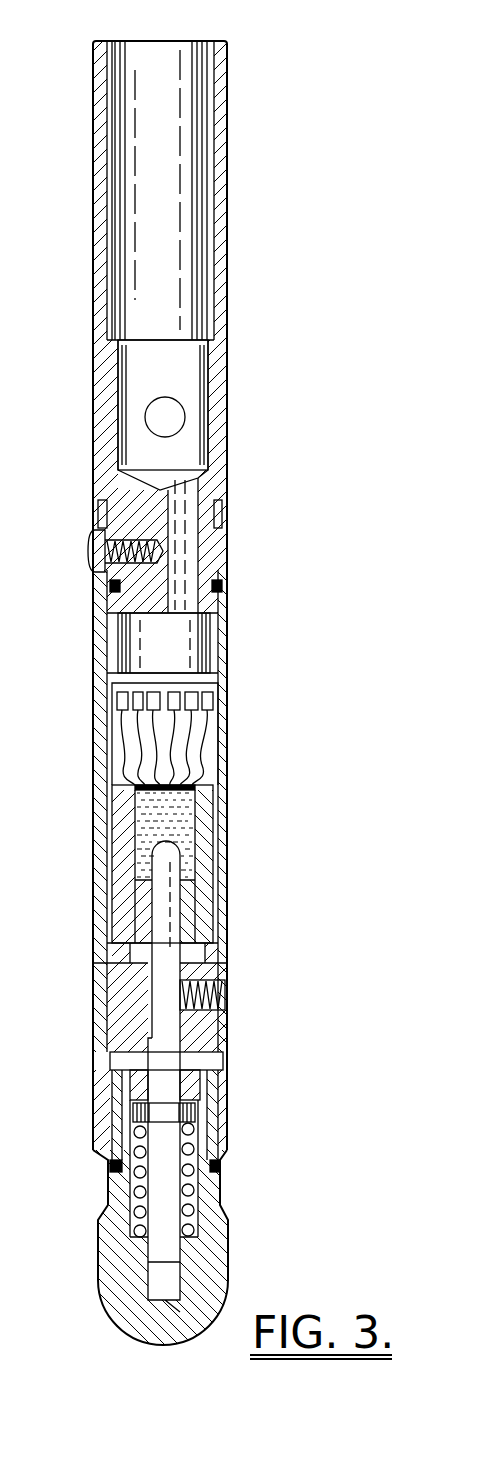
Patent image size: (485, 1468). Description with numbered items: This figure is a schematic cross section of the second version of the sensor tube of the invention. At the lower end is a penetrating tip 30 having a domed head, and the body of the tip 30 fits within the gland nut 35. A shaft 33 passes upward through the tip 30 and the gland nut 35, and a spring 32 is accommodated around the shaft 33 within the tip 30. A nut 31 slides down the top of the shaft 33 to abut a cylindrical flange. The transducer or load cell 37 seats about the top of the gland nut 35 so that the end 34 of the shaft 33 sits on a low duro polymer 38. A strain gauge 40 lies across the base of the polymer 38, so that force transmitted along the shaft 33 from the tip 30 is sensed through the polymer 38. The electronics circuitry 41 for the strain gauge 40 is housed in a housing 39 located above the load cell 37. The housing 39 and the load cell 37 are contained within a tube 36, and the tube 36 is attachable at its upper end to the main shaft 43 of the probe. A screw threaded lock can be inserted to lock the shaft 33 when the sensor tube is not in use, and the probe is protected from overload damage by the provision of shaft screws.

The penetrating tip 30 is at (229, 1283).
The nut 31 is at (196, 1113).
The spring 32 is at (190, 1185).
The shaft 33 is at (170, 1060).
The end of the shaft 34 is at (178, 857).
The gland nut 35 is at (228, 1090).
The tube 36 is at (228, 772).
The load cell 37 is at (108, 925).
The low duro polymer 38 is at (115, 838).
The housing 39 is at (118, 745).
The strain gauge 40 is at (200, 740).
The electronics circuitry 41 is at (214, 702).
The main shaft 43 is at (95, 352).